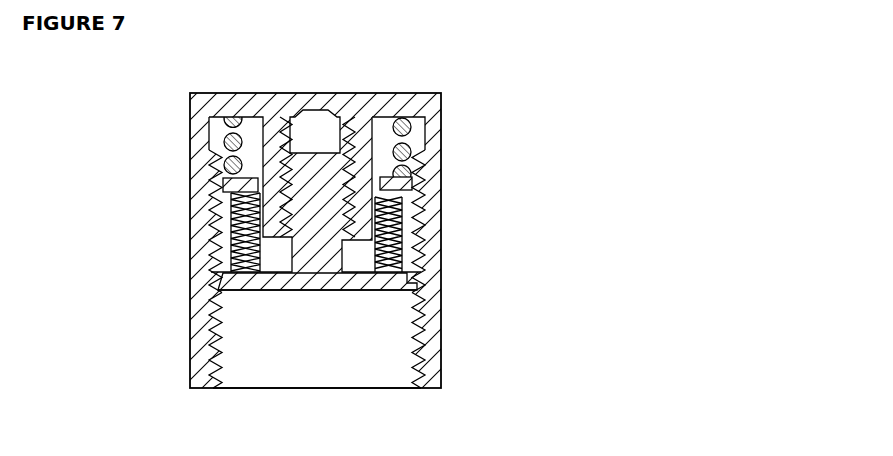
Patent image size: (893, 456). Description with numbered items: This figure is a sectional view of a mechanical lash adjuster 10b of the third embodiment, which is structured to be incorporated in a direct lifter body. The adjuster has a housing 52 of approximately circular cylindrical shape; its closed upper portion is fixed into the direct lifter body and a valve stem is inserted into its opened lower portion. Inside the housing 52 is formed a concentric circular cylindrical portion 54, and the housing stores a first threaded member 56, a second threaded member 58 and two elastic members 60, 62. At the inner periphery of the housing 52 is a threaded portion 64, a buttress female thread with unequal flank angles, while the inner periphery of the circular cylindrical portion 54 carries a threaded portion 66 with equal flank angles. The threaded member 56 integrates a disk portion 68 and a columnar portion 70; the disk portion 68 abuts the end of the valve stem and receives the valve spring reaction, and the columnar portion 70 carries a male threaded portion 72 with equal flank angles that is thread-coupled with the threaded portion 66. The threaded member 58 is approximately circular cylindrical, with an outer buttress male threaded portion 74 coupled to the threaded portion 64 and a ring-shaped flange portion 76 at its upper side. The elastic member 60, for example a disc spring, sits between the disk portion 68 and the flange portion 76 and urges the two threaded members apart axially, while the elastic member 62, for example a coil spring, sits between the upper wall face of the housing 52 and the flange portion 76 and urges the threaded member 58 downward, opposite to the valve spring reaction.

The mechanical lash adjuster 10b is at (484, 185).
The housing 52 is at (443, 285).
The circular cylindrical portion 54 is at (372, 148).
The threaded member 56 is at (336, 292).
The threaded member 58 is at (221, 212).
The elastic member 60 is at (277, 290).
The elastic member 62 is at (225, 138).
The threaded portion 64 is at (213, 345).
The threaded portion 66 is at (344, 108).
The disk portion 68 is at (305, 293).
The columnar portion 70 is at (300, 116).
The threaded portion 72 is at (373, 295).
The threaded portion 74 is at (441, 237).
The flange portion 76 is at (253, 150).